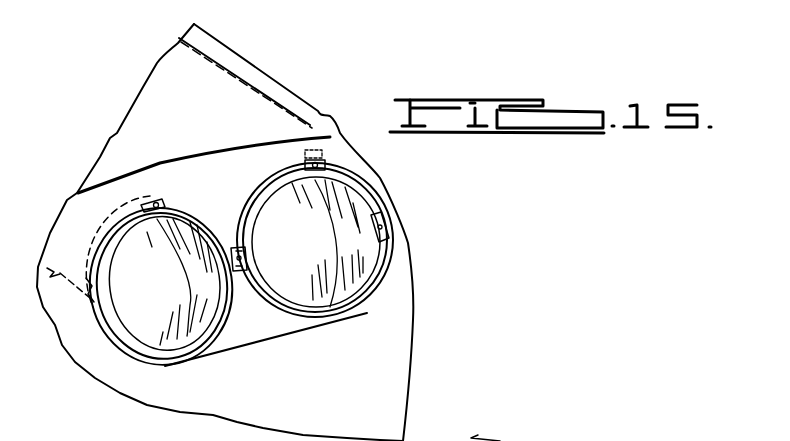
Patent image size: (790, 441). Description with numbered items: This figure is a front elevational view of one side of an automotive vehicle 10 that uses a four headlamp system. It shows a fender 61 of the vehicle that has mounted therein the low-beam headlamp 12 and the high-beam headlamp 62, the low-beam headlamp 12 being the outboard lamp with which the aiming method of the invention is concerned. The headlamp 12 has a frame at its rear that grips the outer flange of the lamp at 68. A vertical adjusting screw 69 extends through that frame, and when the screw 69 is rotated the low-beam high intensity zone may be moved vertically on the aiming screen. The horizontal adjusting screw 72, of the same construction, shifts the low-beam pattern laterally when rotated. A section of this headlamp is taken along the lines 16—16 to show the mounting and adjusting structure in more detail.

The automotive vehicle 10 is at (250, 49).
The low-beam headlamp 12 is at (373, 258).
The section line 16— 16 is at (291, 80).
The fender 61 is at (557, 440).
The high-beam headlamp 62 is at (127, 318).
The outer flange grip point of lamp 68 is at (367, 192).
The vertical adjusting screw 69 is at (118, 212).
The horizontal adjusting screw 72 is at (242, 304).